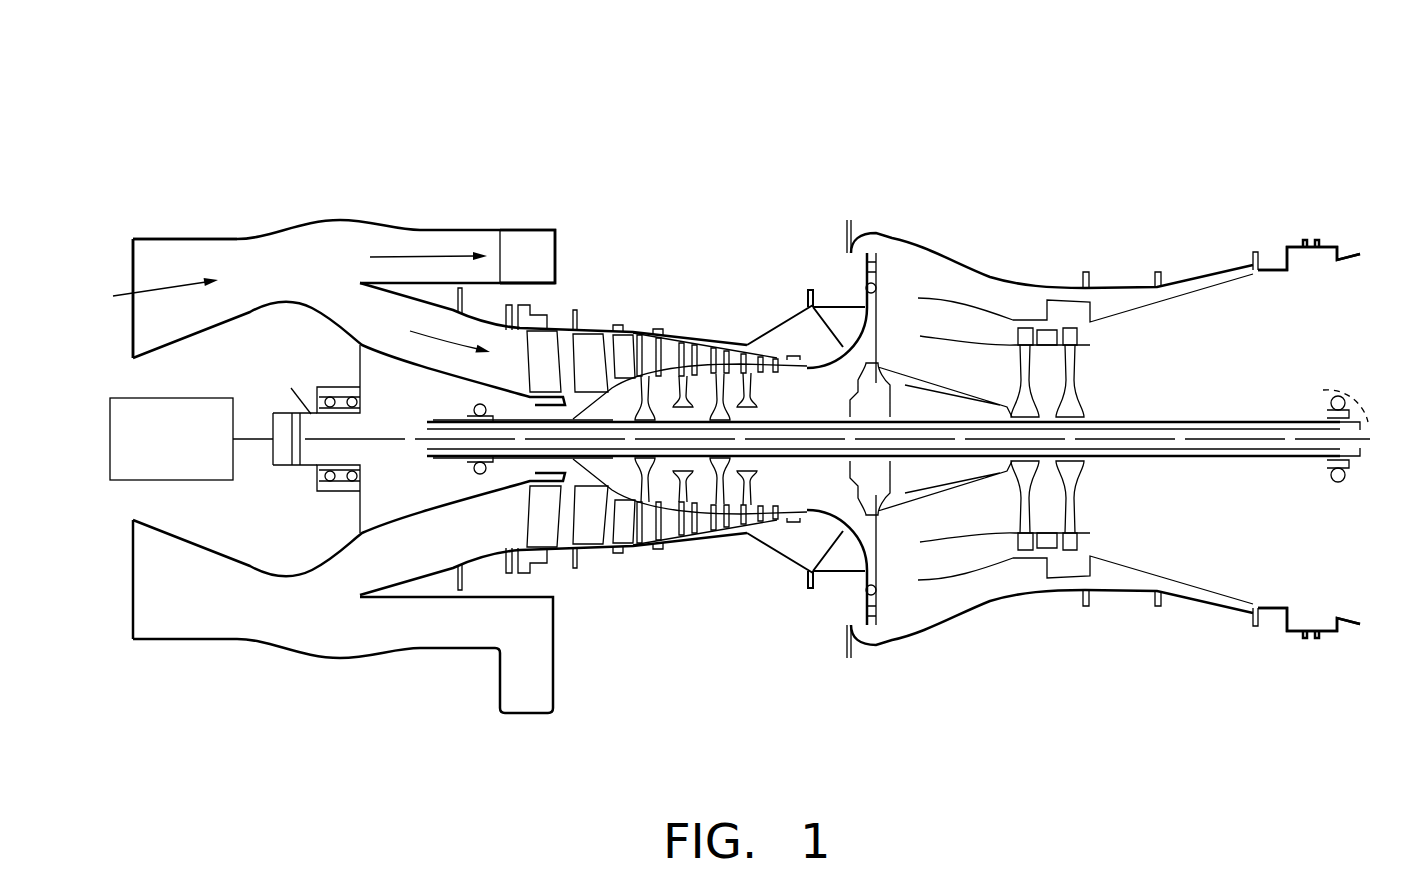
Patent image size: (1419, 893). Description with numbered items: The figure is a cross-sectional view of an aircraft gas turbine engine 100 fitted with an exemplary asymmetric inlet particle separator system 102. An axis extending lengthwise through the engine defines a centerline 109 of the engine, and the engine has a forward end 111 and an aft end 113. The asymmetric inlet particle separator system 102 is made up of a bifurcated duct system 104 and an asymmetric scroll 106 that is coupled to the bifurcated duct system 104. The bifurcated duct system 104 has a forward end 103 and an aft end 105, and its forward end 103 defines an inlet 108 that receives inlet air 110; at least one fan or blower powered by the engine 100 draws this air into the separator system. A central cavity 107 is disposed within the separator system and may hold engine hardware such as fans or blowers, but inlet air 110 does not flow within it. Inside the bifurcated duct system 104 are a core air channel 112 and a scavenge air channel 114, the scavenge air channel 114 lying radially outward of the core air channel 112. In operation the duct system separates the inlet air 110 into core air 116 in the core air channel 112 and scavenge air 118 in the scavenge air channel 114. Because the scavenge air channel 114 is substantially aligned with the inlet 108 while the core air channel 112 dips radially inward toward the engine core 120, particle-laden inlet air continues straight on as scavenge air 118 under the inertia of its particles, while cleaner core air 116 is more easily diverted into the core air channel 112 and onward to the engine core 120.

The aircraft gas turbine engine 100 is at (1055, 123).
The asymmetric inlet particle separator system 102 is at (405, 158).
The forward end of bifurcated duct system 103 is at (140, 239).
The bifurcated duct system 104 is at (253, 236).
The aft end of bifurcated duct system 105 is at (500, 232).
The asymmetric scroll 106 is at (556, 230).
The central cavity 107 is at (322, 556).
The inlet 108 is at (132, 268).
The centerline 109 is at (252, 442).
The inlet air 110 is at (160, 290).
The forward end of engine 111 is at (233, 711).
The core air channel 112 is at (500, 328).
The aft end of engine 113 is at (1377, 559).
The scavenge air channel 114 is at (535, 235).
The core air 116 is at (450, 347).
The scavenge air 118 is at (447, 255).
The engine core 120 is at (934, 232).